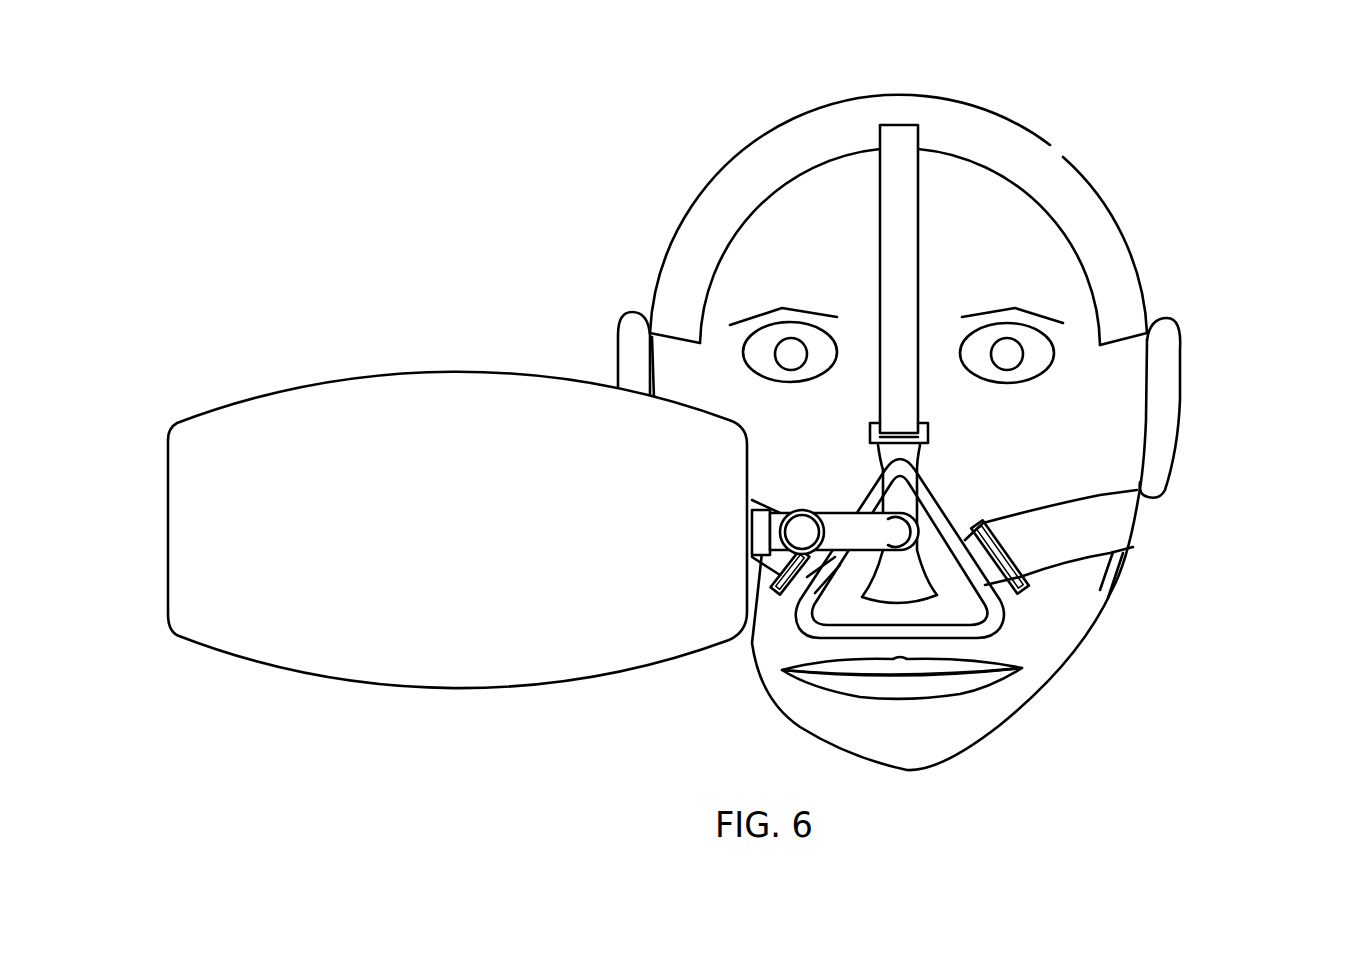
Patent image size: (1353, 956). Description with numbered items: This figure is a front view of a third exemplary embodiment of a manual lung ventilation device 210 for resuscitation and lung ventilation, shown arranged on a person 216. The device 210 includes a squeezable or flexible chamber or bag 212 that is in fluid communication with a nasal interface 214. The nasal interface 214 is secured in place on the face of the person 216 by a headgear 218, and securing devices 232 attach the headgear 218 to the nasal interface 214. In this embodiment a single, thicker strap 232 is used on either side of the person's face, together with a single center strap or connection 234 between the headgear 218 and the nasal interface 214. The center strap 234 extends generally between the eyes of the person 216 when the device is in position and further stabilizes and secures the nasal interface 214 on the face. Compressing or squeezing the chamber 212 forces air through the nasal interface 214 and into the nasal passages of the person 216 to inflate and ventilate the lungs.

The ventilation device 210 is at (715, 410).
The chamber 212 is at (233, 423).
The nasal interface 214 is at (960, 608).
The person 216 is at (1097, 407).
The headgear 218 is at (798, 128).
The securing device 232 is at (1108, 535).
The center strap 234 is at (897, 258).